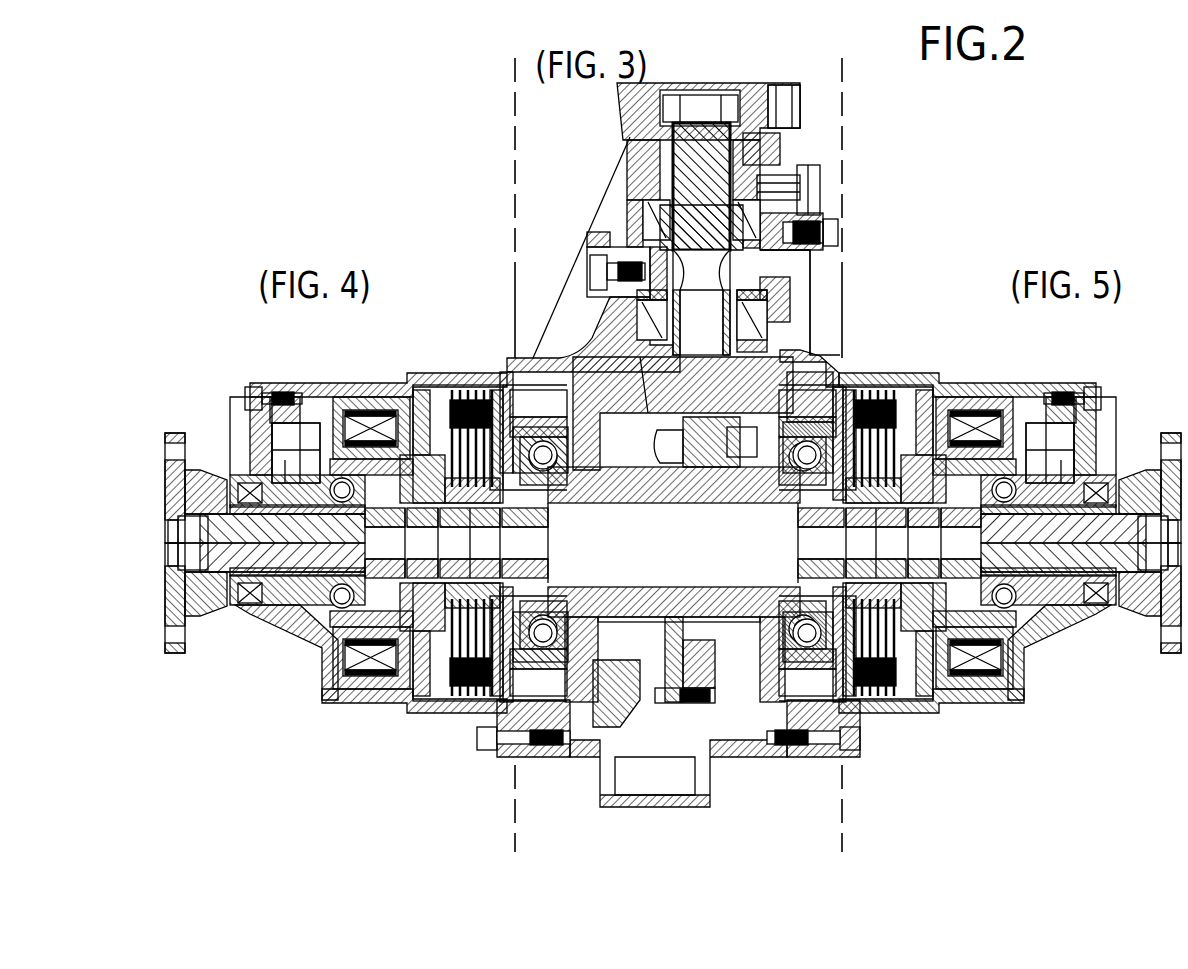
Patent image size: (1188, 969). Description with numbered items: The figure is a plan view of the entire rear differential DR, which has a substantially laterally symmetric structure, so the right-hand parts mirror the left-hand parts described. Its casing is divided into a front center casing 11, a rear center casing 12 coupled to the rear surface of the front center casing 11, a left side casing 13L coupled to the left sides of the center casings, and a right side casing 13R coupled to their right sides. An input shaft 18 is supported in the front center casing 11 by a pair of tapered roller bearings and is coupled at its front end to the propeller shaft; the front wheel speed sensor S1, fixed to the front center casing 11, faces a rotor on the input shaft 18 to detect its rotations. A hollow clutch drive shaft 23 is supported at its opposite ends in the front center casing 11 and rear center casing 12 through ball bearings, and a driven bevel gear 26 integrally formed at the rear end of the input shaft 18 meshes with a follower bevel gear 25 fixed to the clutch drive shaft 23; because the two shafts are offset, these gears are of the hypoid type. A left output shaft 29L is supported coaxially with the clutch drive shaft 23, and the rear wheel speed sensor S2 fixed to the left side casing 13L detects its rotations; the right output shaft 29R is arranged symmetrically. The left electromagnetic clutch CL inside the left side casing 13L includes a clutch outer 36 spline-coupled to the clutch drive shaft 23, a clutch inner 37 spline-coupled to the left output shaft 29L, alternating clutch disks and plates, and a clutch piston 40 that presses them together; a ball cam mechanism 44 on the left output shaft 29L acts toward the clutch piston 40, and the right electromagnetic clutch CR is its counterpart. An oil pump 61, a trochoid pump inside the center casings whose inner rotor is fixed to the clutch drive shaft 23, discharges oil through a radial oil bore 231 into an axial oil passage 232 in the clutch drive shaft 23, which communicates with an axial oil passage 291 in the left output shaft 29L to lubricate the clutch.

The front center casing 11 is at (640, 207).
The rear center casing 12 is at (758, 748).
The left side casing 13L is at (365, 383).
The right side casing 13R is at (1010, 383).
The input shaft 18 is at (694, 321).
The clutch drive shaft 23 is at (747, 627).
The oil bore 231 is at (675, 590).
The oil passage 232 is at (712, 500).
The follower bevel gear 25 is at (635, 698).
The driven bevel gear 26 is at (785, 367).
The oil passage 291 is at (522, 545).
The left output shaft 29L is at (325, 683).
The right output shaft 29R is at (1021, 683).
The clutch outer 36 is at (437, 368).
The clutch inner 37 is at (473, 497).
The clutch piston 40 is at (435, 492).
The ball cam mechanism 44 is at (395, 508).
The oil pump 61 is at (713, 670).
The front wheel speed sensor S1 is at (780, 177).
The rear wheel speed sensor S2 is at (318, 462).
The left electromagnetic clutch CL is at (462, 392).
The right electromagnetic clutch CR is at (880, 382).
The rear differential DR is at (848, 253).